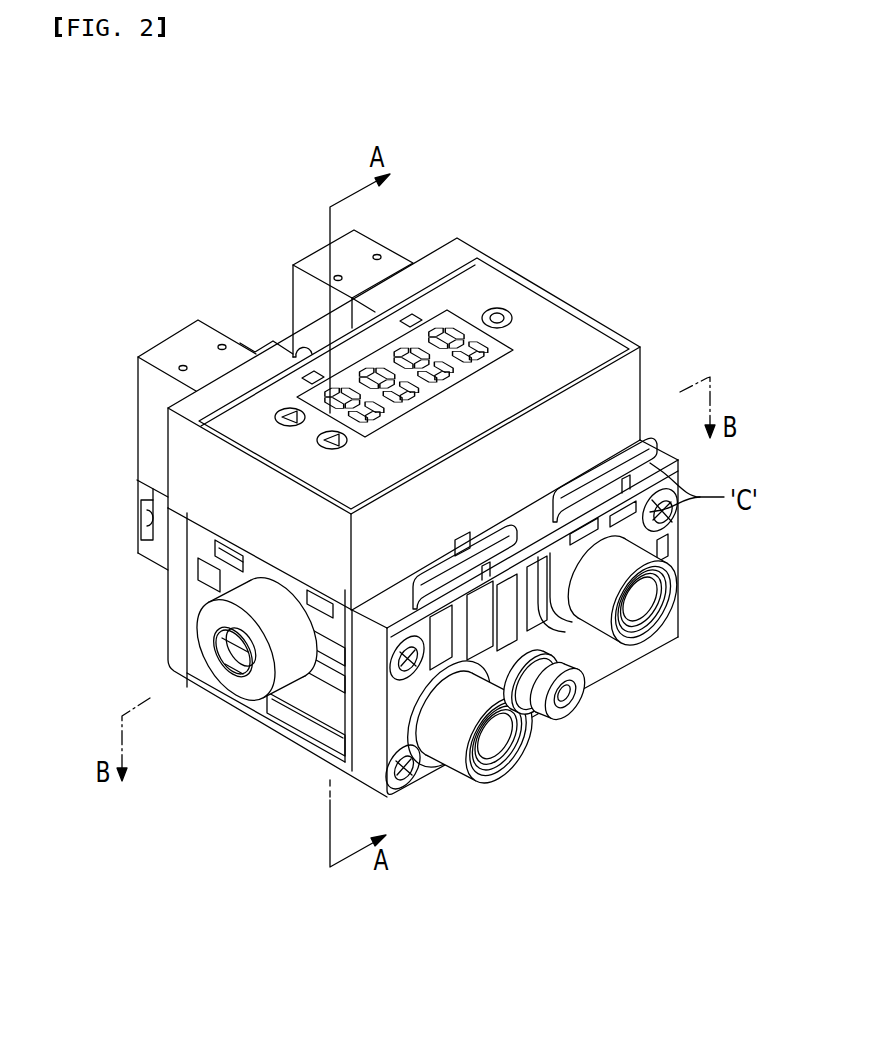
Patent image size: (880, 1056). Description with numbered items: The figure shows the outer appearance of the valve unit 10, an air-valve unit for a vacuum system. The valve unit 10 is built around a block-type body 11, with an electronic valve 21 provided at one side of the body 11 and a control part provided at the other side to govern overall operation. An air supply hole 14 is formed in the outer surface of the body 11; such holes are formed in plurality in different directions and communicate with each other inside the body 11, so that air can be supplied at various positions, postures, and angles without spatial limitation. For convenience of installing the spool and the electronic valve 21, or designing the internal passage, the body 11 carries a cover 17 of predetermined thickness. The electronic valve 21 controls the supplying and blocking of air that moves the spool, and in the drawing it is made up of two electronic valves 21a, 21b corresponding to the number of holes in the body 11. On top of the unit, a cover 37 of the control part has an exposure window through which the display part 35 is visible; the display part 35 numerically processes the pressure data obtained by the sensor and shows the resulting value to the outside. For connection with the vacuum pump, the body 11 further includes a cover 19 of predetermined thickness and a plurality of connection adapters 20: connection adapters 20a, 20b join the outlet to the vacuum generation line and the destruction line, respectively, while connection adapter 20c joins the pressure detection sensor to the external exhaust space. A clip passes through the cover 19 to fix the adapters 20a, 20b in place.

The valve unit 10 is at (160, 170).
The body 11 is at (252, 735).
The air supply hole 14 is at (240, 668).
The cover 17 is at (172, 617).
The cover 19 is at (363, 723).
The connection adapter 20 is at (463, 798).
The connection adapter 20a is at (676, 597).
The connection adapter 20b is at (506, 775).
The connection adapter 20c is at (588, 700).
The electronic valve 21 is at (125, 419).
The electronic valve 21a is at (317, 250).
The electronic valve 21b is at (162, 340).
The display part 35 is at (460, 328).
The cover 37 is at (458, 253).